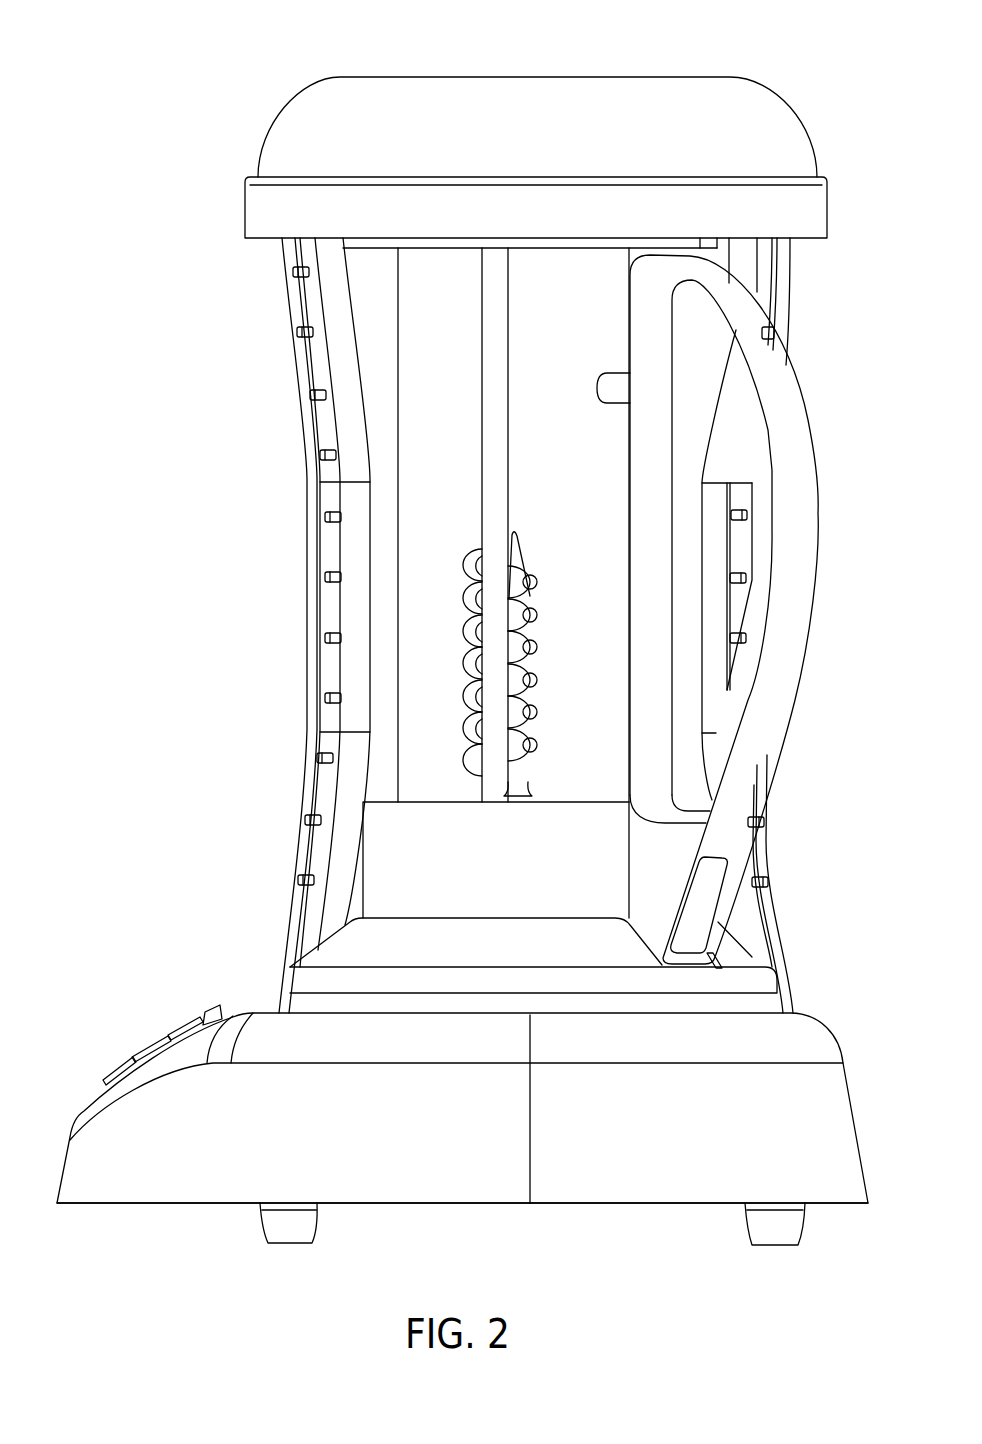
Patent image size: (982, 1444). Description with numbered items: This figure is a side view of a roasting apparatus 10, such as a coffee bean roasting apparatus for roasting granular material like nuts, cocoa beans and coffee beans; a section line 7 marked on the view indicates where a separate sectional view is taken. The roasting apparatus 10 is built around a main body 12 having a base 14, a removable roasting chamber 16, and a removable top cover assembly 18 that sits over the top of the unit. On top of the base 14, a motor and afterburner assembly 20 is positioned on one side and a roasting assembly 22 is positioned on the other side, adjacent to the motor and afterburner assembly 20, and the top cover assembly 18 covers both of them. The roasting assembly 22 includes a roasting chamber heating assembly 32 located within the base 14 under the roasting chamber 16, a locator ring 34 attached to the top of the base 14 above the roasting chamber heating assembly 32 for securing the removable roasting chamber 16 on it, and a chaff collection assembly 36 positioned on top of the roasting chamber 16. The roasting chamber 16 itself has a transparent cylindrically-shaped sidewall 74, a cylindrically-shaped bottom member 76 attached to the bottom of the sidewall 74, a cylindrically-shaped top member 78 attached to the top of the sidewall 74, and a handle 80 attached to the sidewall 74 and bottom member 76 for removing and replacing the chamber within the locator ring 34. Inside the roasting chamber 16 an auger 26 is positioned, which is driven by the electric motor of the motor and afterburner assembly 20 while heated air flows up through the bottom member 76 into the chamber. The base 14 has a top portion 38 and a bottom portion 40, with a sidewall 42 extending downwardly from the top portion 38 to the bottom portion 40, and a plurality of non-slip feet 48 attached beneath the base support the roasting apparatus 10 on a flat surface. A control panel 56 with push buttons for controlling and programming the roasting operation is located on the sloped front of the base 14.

The roasting apparatus 10 is at (236, 62).
The section line 7- 7 is at (488, 63).
The main body 12 is at (308, 606).
The base 14 is at (471, 1136).
The removable roasting chamber 16 is at (347, 858).
The removable top cover assembly 18 is at (538, 76).
The motor and afterburner assembly 20 is at (300, 333).
The roasting assembly 22 is at (396, 414).
The auger 26 is at (547, 576).
The roasting chamber heating assembly 32 is at (780, 1002).
The locator ring 34 is at (320, 950).
The chaff collection assembly 36 is at (715, 246).
The top portion 38 is at (835, 1017).
The bottom portion 40 is at (143, 1205).
The sidewall 42 is at (452, 1145).
The non-slip feet 48 is at (268, 1245).
The control panel 56 is at (83, 1107).
The sidewall 74 is at (458, 410).
The bottom member 76 is at (504, 870).
The top member 78 is at (367, 250).
The handle 80 is at (820, 541).